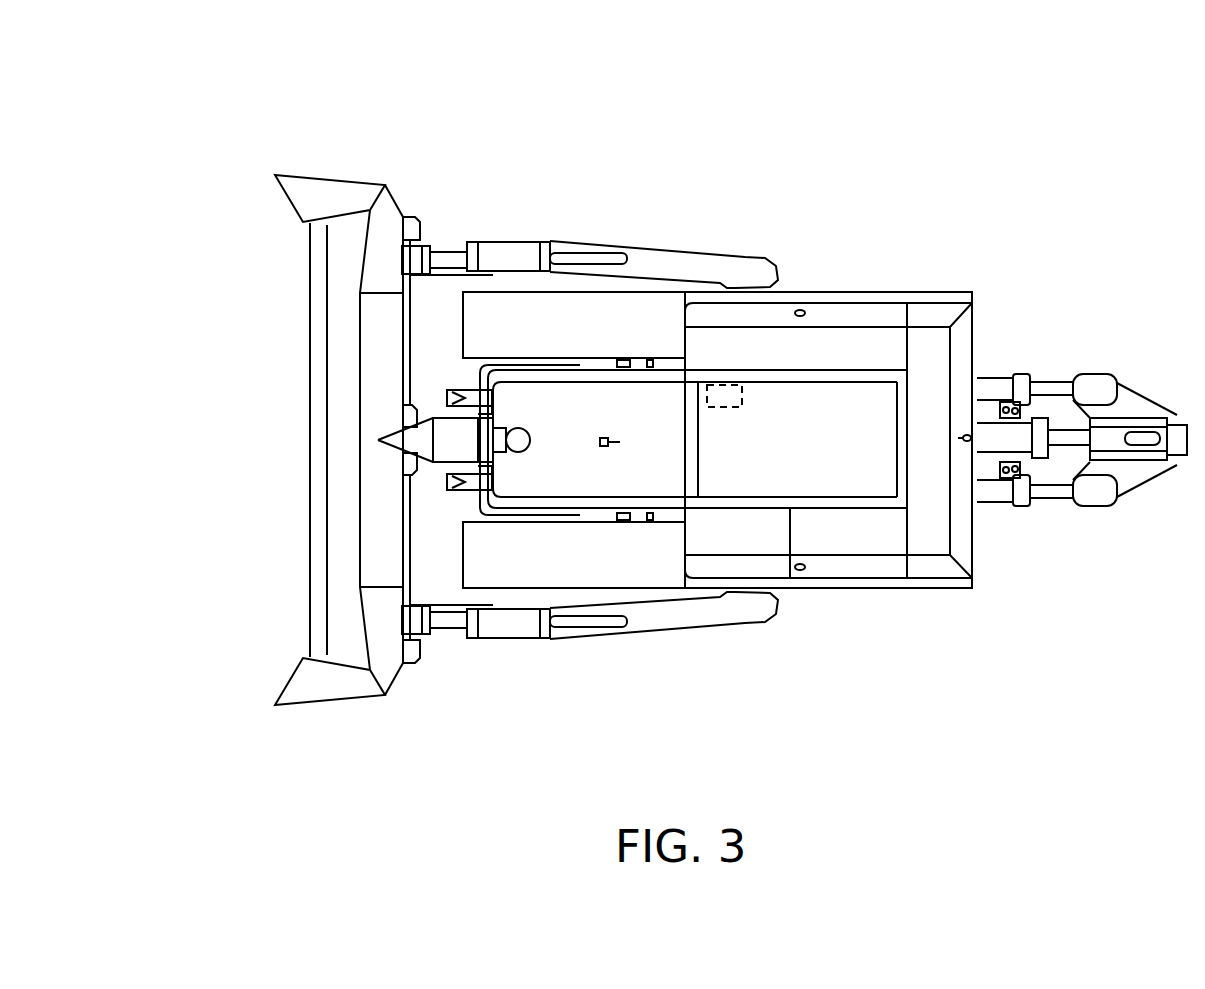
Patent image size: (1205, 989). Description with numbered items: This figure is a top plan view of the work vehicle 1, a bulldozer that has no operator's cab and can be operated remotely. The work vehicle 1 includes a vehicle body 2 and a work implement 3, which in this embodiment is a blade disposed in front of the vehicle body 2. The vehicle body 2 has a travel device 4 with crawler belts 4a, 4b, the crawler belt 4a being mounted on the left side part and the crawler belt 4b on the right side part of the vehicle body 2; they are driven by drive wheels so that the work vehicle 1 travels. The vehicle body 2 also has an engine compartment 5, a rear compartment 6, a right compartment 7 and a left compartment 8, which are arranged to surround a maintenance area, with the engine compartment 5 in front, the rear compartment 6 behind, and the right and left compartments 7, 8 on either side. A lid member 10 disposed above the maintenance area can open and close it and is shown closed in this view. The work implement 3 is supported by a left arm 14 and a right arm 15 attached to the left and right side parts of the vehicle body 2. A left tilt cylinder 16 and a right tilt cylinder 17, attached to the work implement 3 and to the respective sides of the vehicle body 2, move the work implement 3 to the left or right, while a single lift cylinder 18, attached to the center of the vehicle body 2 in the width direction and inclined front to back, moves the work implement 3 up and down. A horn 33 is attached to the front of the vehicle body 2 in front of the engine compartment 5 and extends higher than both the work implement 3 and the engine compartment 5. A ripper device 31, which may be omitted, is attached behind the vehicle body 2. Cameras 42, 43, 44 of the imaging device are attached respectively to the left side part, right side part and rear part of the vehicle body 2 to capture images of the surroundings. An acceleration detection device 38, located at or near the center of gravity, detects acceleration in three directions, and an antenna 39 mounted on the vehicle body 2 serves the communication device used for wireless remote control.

The work vehicle 1 is at (486, 116).
The vehicle body 2 is at (942, 280).
The work implement 3 is at (340, 327).
The travel device 4 is at (522, 598).
The crawler belt 4a is at (588, 570).
The crawler belt 4b is at (557, 313).
The engine compartment 5 is at (644, 400).
The rear compartment 6 is at (937, 358).
The right compartment 7 is at (877, 350).
The left compartment 8 is at (878, 538).
The lid member 10 is at (784, 413).
The left arm 14 is at (702, 619).
The right arm 15 is at (663, 257).
The left tilt cylinder 16 is at (497, 633).
The right tilt cylinder 17 is at (481, 242).
The lift cylinder 18 is at (514, 440).
The ripper device 31 is at (1054, 370).
The horn 33 is at (380, 434).
The acceleration detection device 38 is at (723, 383).
The antenna 39 is at (604, 444).
The camera 42 is at (800, 570).
The camera 43 is at (800, 310).
The camera 44 is at (975, 440).